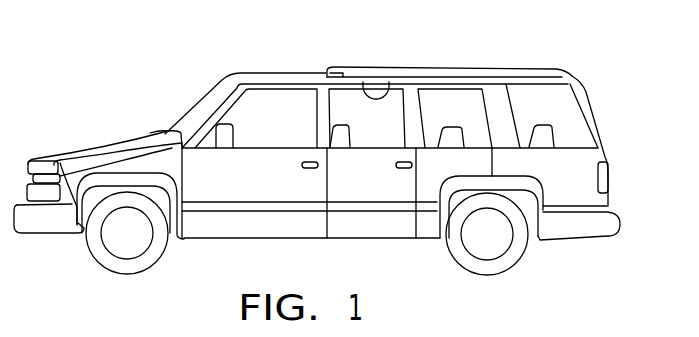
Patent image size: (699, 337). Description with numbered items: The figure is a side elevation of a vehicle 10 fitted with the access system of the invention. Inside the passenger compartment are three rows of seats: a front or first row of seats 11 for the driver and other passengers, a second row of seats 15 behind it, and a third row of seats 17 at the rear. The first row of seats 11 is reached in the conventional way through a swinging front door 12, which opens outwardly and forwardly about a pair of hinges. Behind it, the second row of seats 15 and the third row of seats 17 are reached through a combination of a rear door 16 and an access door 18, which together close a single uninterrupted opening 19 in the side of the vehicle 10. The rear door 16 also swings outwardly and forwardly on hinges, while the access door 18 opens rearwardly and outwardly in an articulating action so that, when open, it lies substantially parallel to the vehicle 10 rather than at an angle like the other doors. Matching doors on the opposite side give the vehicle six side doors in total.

The vehicle 10 is at (600, 97).
The first row of seats 11 is at (342, 124).
The front door 12 is at (260, 187).
The second row of seats 15 is at (457, 126).
The rear door 16 is at (373, 177).
The third row of seats 17 is at (542, 124).
The access door 18 is at (428, 173).
The single uninterrupted opening 19 is at (389, 82).